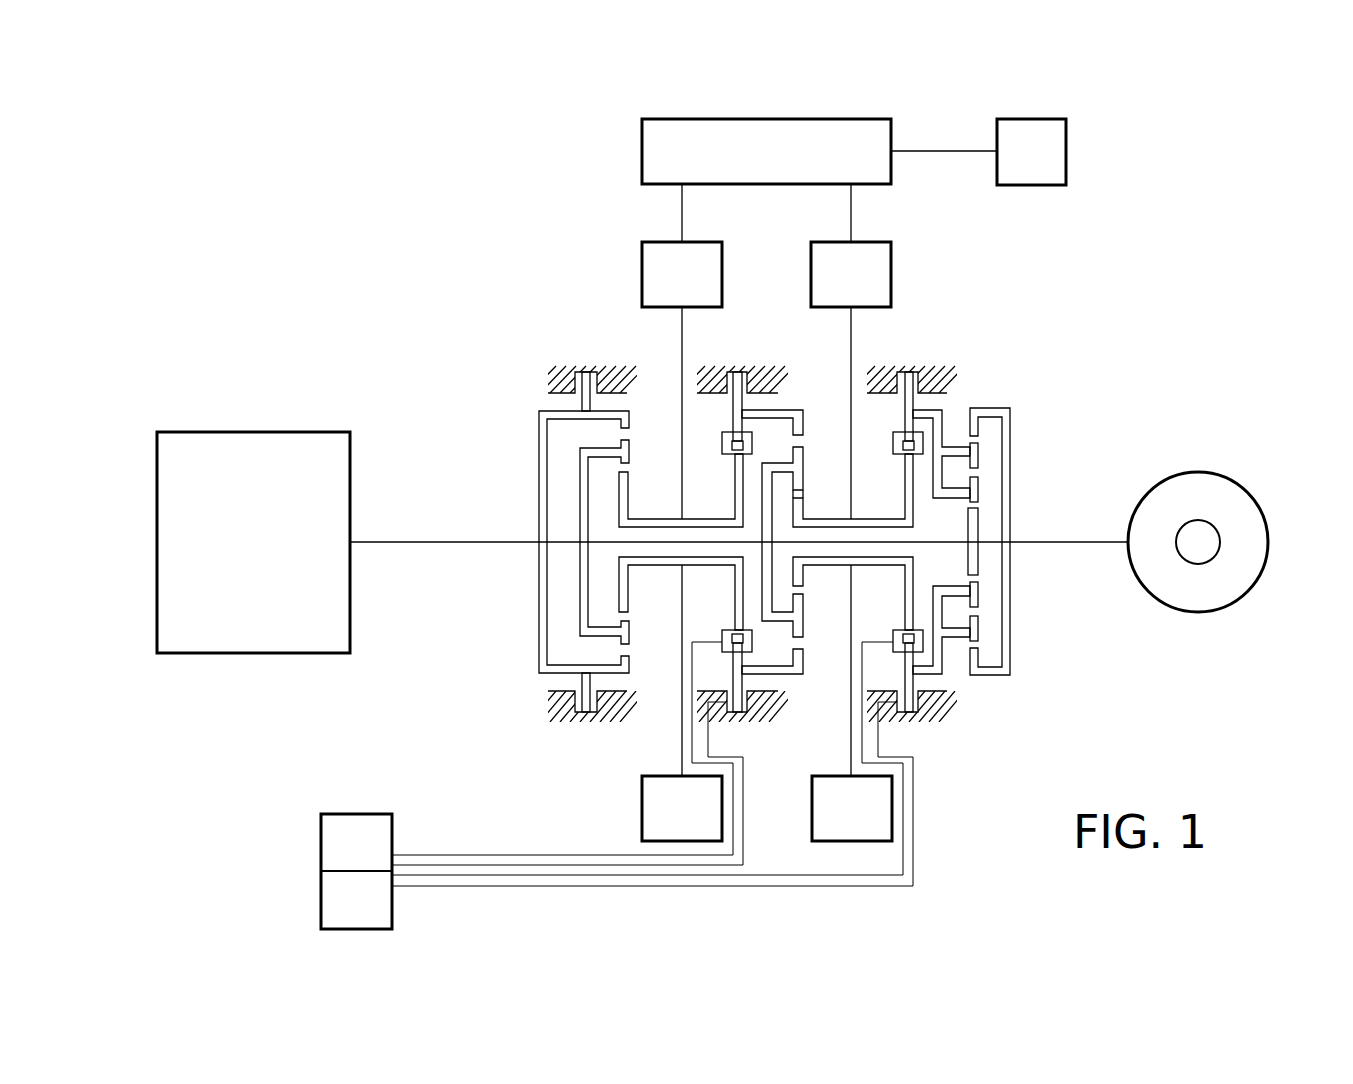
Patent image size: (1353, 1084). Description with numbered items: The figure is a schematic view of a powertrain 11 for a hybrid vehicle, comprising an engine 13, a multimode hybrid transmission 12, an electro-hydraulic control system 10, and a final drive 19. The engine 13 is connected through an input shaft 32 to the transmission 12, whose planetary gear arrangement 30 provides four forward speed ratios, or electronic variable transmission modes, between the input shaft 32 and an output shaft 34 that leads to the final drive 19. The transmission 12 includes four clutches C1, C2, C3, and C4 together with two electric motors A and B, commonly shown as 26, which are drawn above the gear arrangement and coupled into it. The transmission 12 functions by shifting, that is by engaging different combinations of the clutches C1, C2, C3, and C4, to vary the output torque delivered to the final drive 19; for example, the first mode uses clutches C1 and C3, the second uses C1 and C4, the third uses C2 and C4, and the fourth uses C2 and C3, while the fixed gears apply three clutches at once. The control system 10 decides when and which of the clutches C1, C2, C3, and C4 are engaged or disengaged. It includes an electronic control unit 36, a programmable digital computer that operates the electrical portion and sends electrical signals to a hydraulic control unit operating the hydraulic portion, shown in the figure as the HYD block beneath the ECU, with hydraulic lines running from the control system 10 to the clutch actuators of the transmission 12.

The electro-hydraulic control system 10 is at (306, 818).
The powertrain 11 is at (284, 160).
The multimode hybrid transmission 12 is at (530, 325).
The engine 13 is at (222, 447).
The final drive 19 is at (1186, 487).
The electric motors A and B 26 is at (630, 256).
The planetary gear arrangement 30 is at (998, 381).
The input shaft 32 is at (496, 540).
The output shaft 34 is at (1047, 546).
The electronic control unit 36 is at (355, 818).
The clutch C1 is at (991, 436).
The clutch C2 is at (991, 467).
The clutch C3 is at (818, 420).
The clutch C4 is at (819, 494).